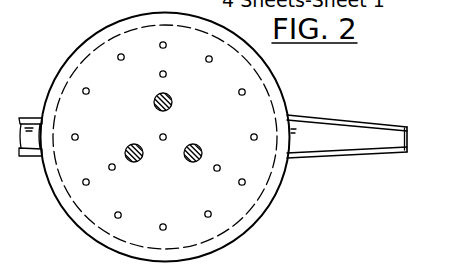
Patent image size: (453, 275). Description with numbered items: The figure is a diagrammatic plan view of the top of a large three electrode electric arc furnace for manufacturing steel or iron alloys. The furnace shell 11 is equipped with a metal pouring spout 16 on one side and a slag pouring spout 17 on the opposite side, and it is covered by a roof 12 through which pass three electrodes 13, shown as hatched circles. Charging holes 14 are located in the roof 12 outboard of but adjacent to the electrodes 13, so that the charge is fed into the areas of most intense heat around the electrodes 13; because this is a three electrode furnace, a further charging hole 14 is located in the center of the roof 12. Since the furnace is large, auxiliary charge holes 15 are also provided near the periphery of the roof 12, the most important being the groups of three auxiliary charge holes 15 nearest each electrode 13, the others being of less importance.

The furnace shell 11 is at (243, 230).
The roof 12 is at (190, 201).
The electrodes 13 is at (171, 108).
The charging holes 14 is at (160, 77).
The auxiliary charge holes 15 is at (211, 214).
The metal pouring spout 16 is at (360, 132).
The slag pouring spout 17 is at (29, 158).